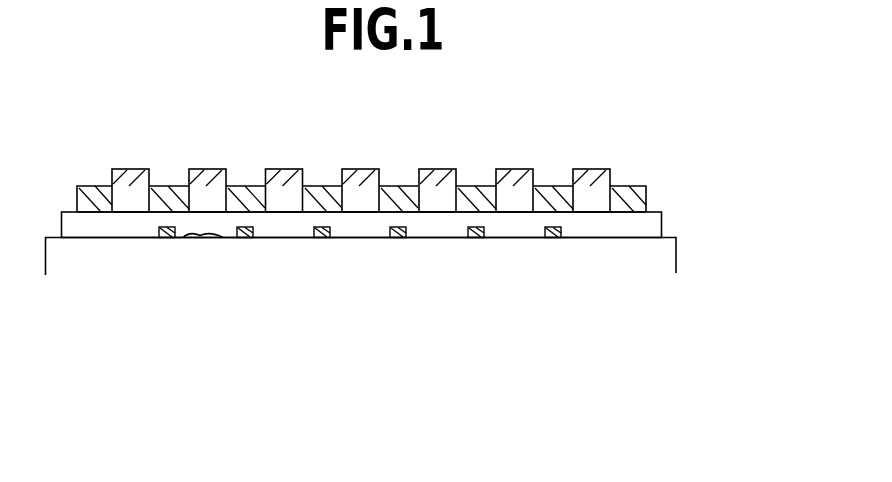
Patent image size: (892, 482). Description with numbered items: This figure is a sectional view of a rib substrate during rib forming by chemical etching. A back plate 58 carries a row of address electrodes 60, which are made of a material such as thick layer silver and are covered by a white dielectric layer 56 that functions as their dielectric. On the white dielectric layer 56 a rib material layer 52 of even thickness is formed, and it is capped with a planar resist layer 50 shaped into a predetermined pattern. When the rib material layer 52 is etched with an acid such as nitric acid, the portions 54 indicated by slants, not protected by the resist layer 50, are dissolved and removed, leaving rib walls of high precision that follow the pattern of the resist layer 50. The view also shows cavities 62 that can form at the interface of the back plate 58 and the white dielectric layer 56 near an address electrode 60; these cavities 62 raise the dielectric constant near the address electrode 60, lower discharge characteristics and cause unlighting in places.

The resist layer 50 is at (513, 177).
The rib material layer 52 is at (670, 199).
The portions of the rib material layer 54 is at (477, 197).
The white dielectric layer 56 is at (647, 227).
The back plate 58 is at (662, 253).
The address electrodes 60 is at (399, 238).
The cavities 62 is at (205, 247).